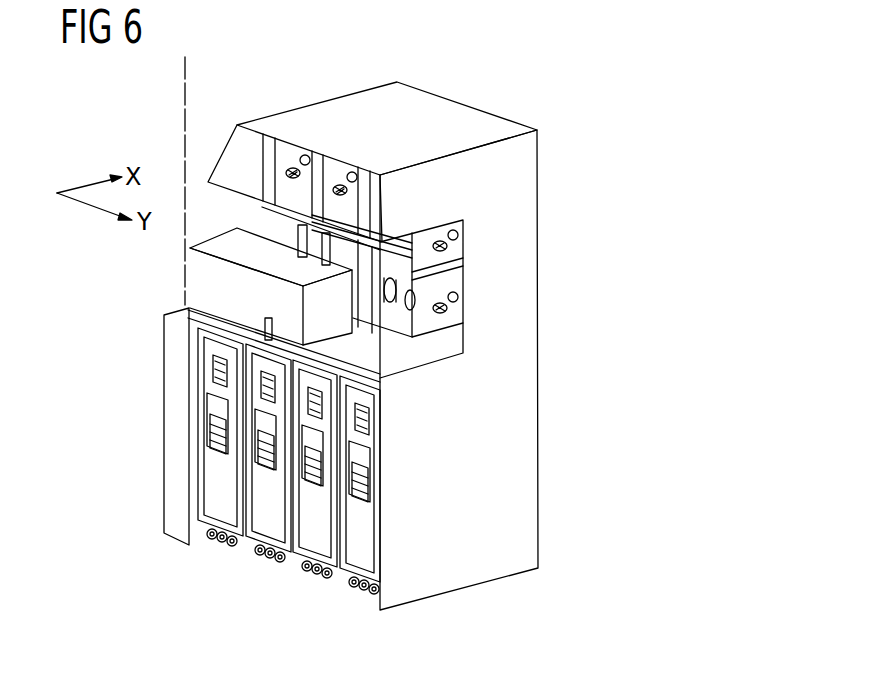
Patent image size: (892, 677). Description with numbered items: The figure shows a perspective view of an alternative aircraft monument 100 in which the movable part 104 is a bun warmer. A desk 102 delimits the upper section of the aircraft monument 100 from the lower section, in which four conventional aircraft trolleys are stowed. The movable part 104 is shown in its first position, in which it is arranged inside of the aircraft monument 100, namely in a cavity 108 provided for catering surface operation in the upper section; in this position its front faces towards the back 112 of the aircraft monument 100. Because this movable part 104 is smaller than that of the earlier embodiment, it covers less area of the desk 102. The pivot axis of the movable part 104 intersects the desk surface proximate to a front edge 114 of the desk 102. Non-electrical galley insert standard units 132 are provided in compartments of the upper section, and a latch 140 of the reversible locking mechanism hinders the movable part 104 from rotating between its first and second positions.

The aircraft monument 100 is at (552, 96).
The desk 102 is at (421, 357).
The movable part 104 is at (197, 272).
The cavity 108 is at (417, 232).
The back 112 is at (458, 101).
The front edge 114 is at (341, 362).
The non-electrical galley insert standard unit 132 is at (338, 173).
The latch 140 is at (264, 323).